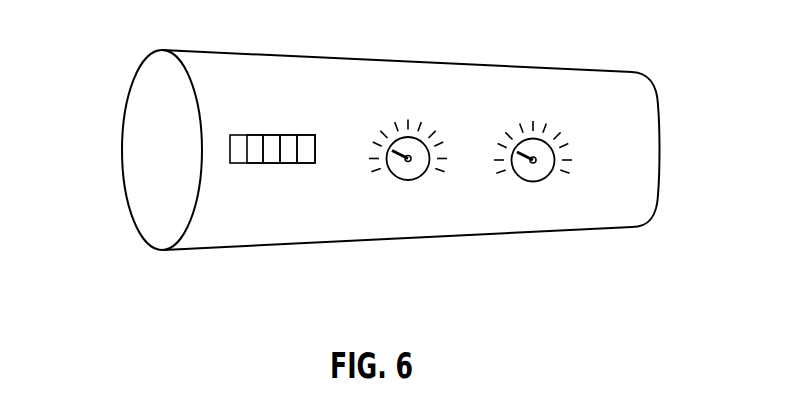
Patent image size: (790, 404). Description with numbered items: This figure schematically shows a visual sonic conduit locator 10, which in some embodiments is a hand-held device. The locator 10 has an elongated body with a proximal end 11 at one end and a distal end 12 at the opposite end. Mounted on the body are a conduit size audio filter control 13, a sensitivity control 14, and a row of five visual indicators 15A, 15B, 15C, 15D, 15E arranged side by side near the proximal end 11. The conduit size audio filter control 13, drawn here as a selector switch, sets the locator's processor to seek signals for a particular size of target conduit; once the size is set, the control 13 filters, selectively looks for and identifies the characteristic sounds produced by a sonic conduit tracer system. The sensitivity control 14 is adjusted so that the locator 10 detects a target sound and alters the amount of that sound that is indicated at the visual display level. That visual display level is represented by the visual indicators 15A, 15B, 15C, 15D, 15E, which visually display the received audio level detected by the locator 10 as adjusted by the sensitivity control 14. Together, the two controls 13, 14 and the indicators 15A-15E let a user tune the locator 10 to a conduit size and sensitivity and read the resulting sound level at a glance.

The visual sonic conduit locator 10 is at (212, 297).
The proximal end 11 is at (97, 157).
The distal end 12 is at (670, 153).
The conduit size audio filter control 13 is at (408, 180).
The sensitivity control 14 is at (533, 181).
The visual indicator 15A is at (238, 154).
The visual indicator 15B is at (257, 163).
The visual indicator 15C is at (277, 135).
The visual indicator 15D is at (287, 135).
The visual indicator 15E is at (308, 163).